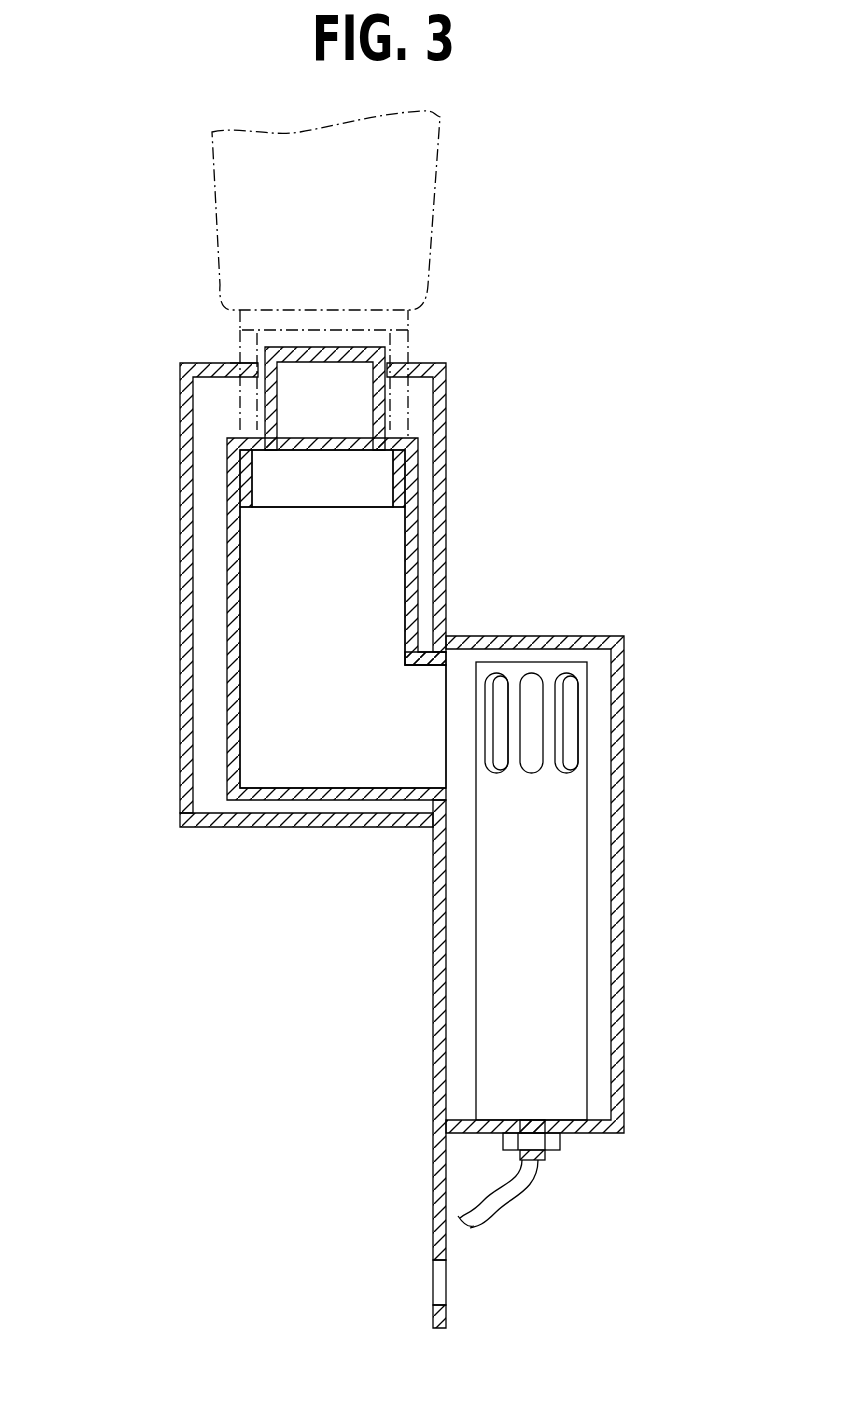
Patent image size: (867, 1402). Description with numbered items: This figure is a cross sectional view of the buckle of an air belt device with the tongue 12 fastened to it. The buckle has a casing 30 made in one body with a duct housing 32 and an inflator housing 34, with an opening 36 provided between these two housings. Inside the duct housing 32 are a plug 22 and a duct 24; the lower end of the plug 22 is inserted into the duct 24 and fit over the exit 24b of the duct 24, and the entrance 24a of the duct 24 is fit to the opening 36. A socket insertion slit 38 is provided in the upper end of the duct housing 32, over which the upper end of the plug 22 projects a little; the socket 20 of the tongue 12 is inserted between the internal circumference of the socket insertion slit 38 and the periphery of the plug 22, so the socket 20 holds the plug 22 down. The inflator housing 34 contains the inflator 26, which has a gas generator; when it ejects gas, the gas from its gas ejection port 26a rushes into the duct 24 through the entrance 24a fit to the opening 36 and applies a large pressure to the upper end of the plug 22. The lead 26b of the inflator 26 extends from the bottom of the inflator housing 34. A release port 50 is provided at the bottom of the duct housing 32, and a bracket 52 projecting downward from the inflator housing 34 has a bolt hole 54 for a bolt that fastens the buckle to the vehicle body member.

The tongue 12 is at (210, 225).
The socket 20 is at (408, 348).
The plug 22 is at (386, 410).
The duct 24 is at (259, 619).
The entrance of the duct 24a is at (422, 732).
The exit of the duct 24b is at (327, 480).
The inflator 26 is at (598, 961).
The gas ejection port of the inflator 26a is at (562, 735).
The cable / connector 26b is at (510, 1193).
The casing 30 is at (253, 621).
The duct housing 32 is at (452, 500).
The inflator housing 34 is at (474, 987).
The opening 36 is at (440, 636).
The socket insertion slit 38 is at (242, 363).
The release port 50 is at (300, 815).
The bracket 52 is at (430, 1248).
The bolt hole 54 is at (435, 1295).